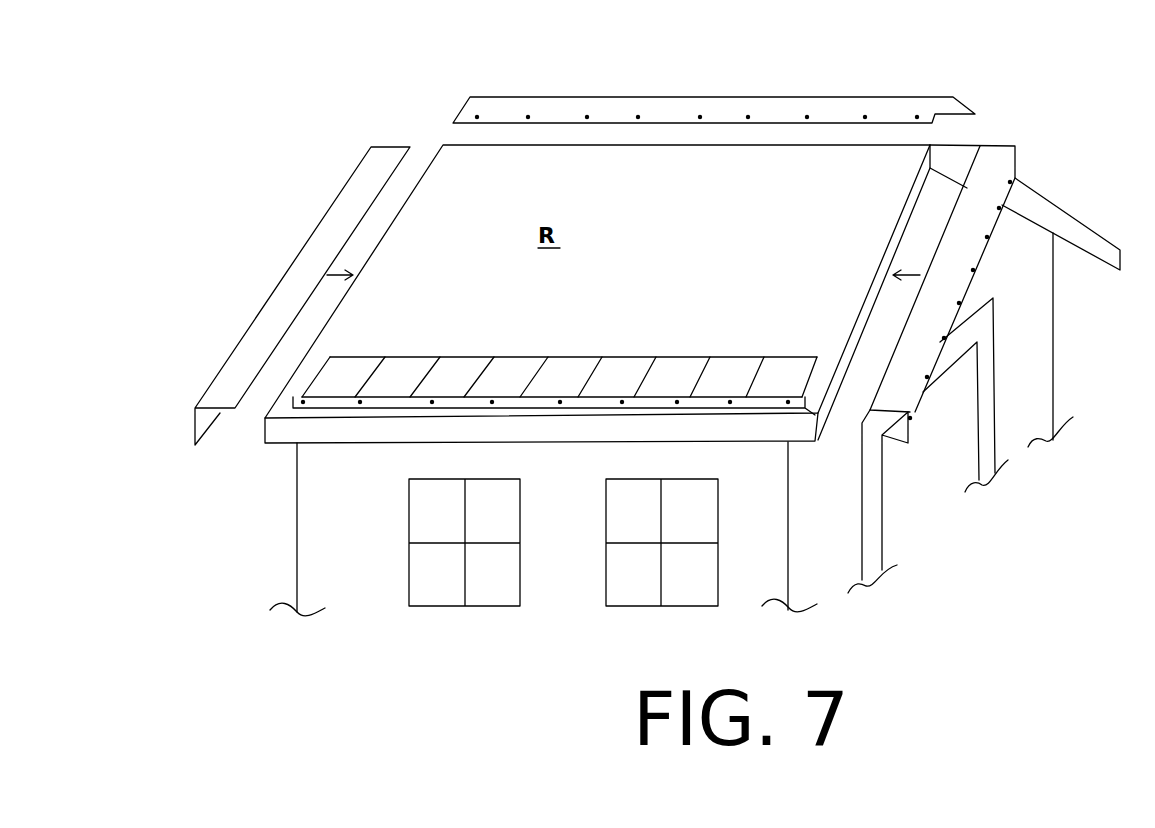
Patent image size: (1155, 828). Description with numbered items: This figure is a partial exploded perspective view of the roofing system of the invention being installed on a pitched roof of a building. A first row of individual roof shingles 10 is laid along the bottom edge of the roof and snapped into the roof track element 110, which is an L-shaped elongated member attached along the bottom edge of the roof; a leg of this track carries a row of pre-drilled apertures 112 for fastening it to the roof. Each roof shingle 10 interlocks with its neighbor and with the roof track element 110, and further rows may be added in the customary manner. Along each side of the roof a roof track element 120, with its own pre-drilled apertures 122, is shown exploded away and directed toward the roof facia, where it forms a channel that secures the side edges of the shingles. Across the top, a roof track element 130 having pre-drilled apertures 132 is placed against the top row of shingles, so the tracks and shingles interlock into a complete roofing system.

The roof shingle 10 is at (364, 345).
The roof track element 110 is at (675, 400).
The pre-drilled apertures 112 is at (730, 397).
The roof track element 120 is at (333, 200).
The pre-drilled apertures 122 is at (1015, 178).
The roof track element 130 is at (623, 108).
The pre-drilled apertures 132 is at (748, 117).